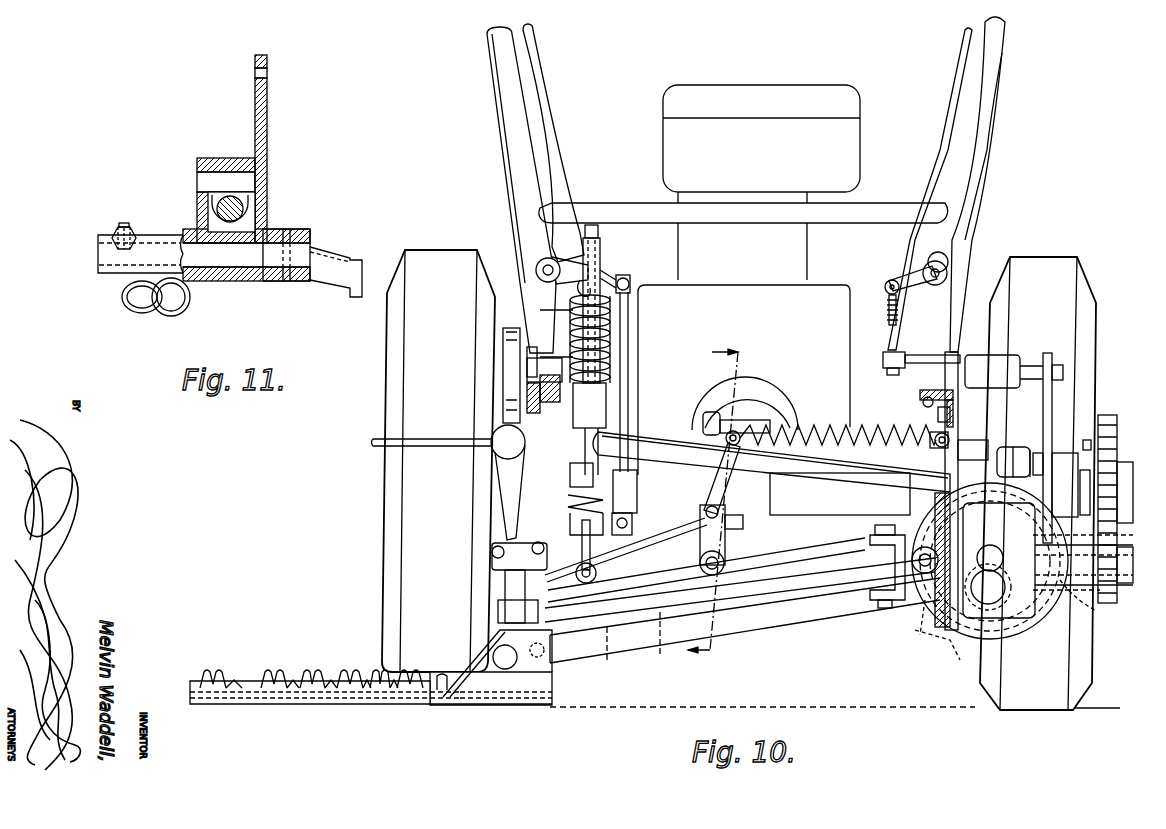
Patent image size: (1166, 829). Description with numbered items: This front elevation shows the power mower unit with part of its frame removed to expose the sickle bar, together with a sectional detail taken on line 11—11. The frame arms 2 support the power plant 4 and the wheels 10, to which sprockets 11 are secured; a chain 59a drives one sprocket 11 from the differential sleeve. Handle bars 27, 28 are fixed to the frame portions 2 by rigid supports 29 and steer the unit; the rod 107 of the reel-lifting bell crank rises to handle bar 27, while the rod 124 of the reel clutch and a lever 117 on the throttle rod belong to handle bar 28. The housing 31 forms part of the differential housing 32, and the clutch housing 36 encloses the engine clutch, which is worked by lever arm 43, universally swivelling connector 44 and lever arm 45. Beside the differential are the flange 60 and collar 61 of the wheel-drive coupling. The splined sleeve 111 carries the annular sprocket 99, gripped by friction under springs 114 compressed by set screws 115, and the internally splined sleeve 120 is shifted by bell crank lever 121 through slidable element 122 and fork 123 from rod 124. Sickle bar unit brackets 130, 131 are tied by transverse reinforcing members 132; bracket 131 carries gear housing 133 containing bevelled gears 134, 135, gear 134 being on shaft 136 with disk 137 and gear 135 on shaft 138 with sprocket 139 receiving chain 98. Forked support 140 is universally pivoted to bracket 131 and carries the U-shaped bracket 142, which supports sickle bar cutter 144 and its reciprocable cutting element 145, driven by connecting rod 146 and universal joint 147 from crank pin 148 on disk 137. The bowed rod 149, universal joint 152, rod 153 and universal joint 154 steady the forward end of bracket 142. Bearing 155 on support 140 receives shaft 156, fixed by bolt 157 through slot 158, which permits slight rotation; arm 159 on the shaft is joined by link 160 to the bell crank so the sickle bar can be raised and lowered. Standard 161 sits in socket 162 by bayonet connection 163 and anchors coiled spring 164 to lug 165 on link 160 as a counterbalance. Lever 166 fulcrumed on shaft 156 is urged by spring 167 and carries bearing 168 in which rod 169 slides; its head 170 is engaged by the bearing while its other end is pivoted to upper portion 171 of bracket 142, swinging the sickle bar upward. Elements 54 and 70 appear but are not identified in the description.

In FIG. 10, the arms 2 is at (736, 380).
In FIG. 10, the power plant 4 is at (733, 92).
In FIG. 10, the wheels 10 is at (388, 362).
In FIG. 10, the sprockets 11 is at (697, 508).
In FIG. 10, the handle bar 27 is at (500, 90).
In FIG. 10, the handle bar 28 is at (980, 103).
In FIG. 10, the rigid supports 29 is at (532, 282).
In FIG. 10, the housing 31 is at (898, 491).
In FIG. 10, the differential housing 32 is at (672, 432).
In FIG. 10, the clutch housing 36 is at (798, 425).
In FIG. 10, the lever arm 43 is at (650, 596).
In FIG. 10, the universally swivelling connector 44 is at (630, 355).
In FIG. 10, the lever arm 45 is at (616, 276).
In FIG. 10, the bracket 54 is at (510, 328).
In FIG. 10, the chain 59a is at (962, 340).
In FIG. 10, the flange 60 is at (1000, 448).
In FIG. 10, the collar 61 is at (1015, 448).
In FIG. 10, the shaft 70 is at (1032, 448).
In FIG. 10, the chain 98 is at (1118, 447).
In FIG. 10, the sprocket 99 is at (1120, 440).
In FIG. 10, the rod 107 is at (560, 120).
In FIG. 10, the sleeve 111 is at (1105, 530).
In FIG. 10, the springs 114 is at (1090, 440).
In FIG. 10, the set screws 115 is at (1085, 470).
In FIG. 10, the lever 117 is at (890, 280).
In FIG. 10, the internally splined sleeve 120 is at (1065, 453).
In FIG. 10, the bell crank lever 121 is at (905, 345).
In FIG. 10, the slidable element 122 is at (905, 370).
In FIG. 10, the fork 123 is at (1050, 393).
In FIG. 10, the rod 124 is at (948, 125).
In FIG. 10, the sickle bar unit bracket 130 is at (513, 392).
In FIG. 10, the sickle bar unit bracket 131 is at (968, 432).
In FIG. 10, the transverse reinforcing members 132 is at (860, 470).
In FIG. 10, the gear housing 133 is at (1020, 610).
In FIG. 10, the bevelled gear 134 is at (988, 568).
In FIG. 10, the bevelled gear 135 is at (995, 548).
In FIG. 10, the shaft 136 is at (912, 548).
In FIG. 10, the disk 137 is at (1035, 610).
In FIG. 10, the shaft 138 is at (1095, 612).
In FIG. 10, the sprocket 139 is at (868, 548).
In FIG. 11, the forked support 140 is at (147, 313).
In FIG. 10, the forked support 140 is at (687, 600).
In FIG. 10, the sickle bar supporting bracket 142 is at (553, 695).
In FIG. 10, the sickle bar cutter 144 is at (300, 700).
In FIG. 10, the reciprocable cutting element 145 is at (245, 680).
In FIG. 10, the connecting rod 146 is at (755, 628).
In FIG. 10, the universal joint 147 is at (925, 640).
In FIG. 10, the crank pin 148 is at (945, 640).
In FIG. 10, the bowed rod 149 is at (510, 490).
In FIG. 10, the universal joint 152 is at (492, 562).
In FIG. 10, the rod 153 is at (505, 588).
In FIG. 10, the universal joint 154 is at (498, 610).
In FIG. 11, the bearing 155 is at (112, 260).
In FIG. 10, the bearing 155 is at (740, 585).
In FIG. 11, the shaft 156 is at (238, 260).
In FIG. 10, the shaft 156 is at (722, 568).
In FIG. 11, the bolt 157 is at (127, 228).
In FIG. 10, the bolt 157 is at (735, 530).
In FIG. 11, the slot 158 is at (121, 227).
In FIG. 11, the arm 159 is at (336, 258).
In FIG. 10, the arm 159 is at (650, 548).
In FIG. 10, the link 160 is at (575, 520).
In FIG. 10, the vertical standard 161 is at (612, 312).
In FIG. 10, the socket 162 is at (608, 398).
In FIG. 10, the bayonet slot and pin connection 163 is at (640, 485).
In FIG. 10, the coiled spring 164 is at (612, 340).
In FIG. 10, the lug 165 is at (580, 540).
In FIG. 11, the lever 166 is at (262, 128).
In FIG. 10, the lever 166 is at (722, 482).
In FIG. 10, the spring 167 is at (880, 430).
In FIG. 11, the bearing 168 is at (213, 224).
In FIG. 10, the bearing 168 is at (727, 525).
In FIG. 11, the rod 169 is at (253, 213).
In FIG. 10, the rod 169 is at (655, 538).
In FIG. 10, the head 170 is at (720, 512).
In FIG. 10, the upper portion 171 is at (562, 603).